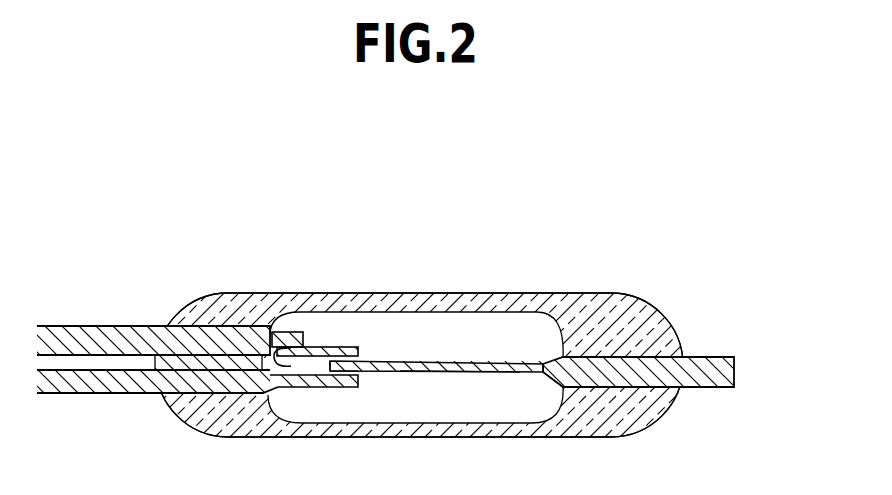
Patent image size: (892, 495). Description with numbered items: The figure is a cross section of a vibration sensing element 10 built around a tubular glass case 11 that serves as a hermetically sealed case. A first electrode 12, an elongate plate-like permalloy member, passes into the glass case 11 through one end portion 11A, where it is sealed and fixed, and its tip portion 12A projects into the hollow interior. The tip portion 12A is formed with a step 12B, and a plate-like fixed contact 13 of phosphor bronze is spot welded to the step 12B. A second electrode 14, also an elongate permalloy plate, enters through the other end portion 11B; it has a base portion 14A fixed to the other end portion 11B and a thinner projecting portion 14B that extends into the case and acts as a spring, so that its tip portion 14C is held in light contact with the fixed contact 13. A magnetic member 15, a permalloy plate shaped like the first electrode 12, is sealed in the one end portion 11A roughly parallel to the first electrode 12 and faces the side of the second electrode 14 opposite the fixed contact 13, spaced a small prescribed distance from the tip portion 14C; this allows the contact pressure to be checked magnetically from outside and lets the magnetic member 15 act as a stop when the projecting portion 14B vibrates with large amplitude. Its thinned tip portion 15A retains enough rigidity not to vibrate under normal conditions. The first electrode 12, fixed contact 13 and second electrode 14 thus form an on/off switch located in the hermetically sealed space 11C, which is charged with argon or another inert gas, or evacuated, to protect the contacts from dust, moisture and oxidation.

The vibration sensing element 10 is at (396, 232).
The glass case 11 is at (592, 298).
The one end portion 11A is at (198, 293).
The other end portion 11B is at (663, 312).
The hermetically sealed space 11C is at (498, 327).
The first electrode 12 is at (103, 325).
The tip portion of the first electrode 12A is at (286, 345).
The step 12B is at (275, 333).
The fixed contact 13 is at (352, 348).
The second electrode 14 is at (520, 378).
The base portion 14A is at (712, 358).
The projecting portion 14B is at (461, 371).
The tip portion of the second electrode 14C is at (348, 386).
The magnetic member 15 is at (287, 390).
The tip portion of the magnetic member 15A is at (327, 388).